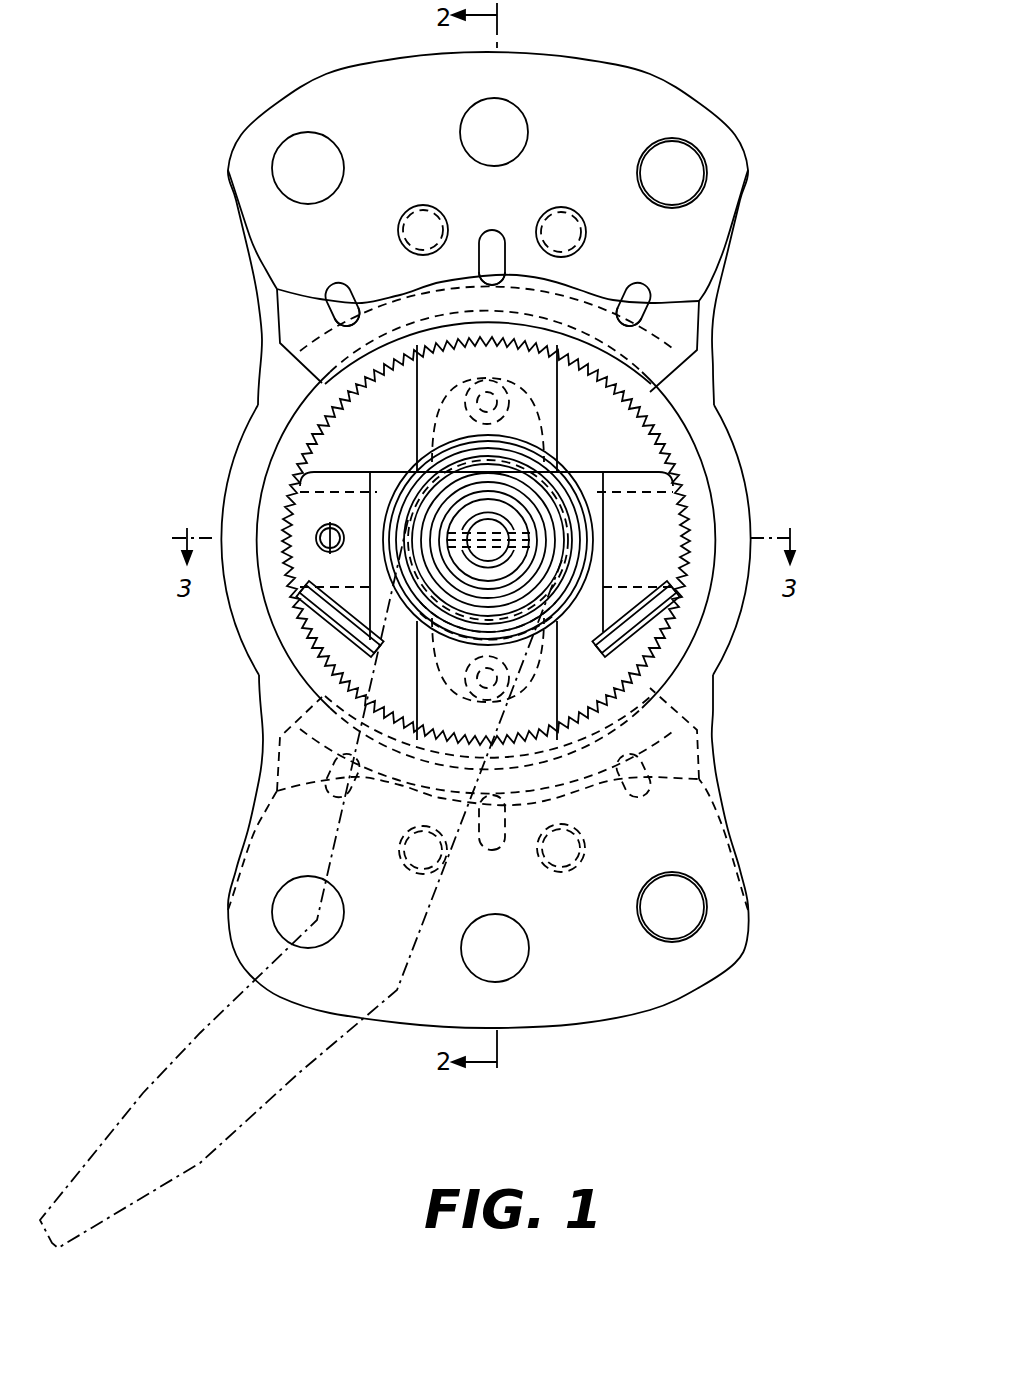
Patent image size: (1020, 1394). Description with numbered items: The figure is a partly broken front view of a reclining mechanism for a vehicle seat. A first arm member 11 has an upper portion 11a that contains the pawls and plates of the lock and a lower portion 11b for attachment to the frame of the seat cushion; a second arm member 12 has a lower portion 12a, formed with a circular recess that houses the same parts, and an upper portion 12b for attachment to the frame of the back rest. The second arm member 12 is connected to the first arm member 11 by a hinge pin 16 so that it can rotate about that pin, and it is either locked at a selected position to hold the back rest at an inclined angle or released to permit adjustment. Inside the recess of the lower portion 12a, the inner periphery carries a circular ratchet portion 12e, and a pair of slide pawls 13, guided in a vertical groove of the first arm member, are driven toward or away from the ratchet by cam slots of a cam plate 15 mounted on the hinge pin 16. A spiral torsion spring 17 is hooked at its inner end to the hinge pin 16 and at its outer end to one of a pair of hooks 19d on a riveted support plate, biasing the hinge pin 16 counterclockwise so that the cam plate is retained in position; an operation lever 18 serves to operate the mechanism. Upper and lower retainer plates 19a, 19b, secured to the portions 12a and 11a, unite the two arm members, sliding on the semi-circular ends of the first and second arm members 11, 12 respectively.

The first arm member 11 is at (245, 801).
The upper portion of first arm member 11a is at (579, 540).
The lower portion of first arm member 11b is at (695, 858).
The second arm member 12 is at (740, 248).
The lower portion of second arm member 12a is at (718, 645).
The upper portion of second arm member 12b is at (708, 313).
The circular ratchet portion 12e is at (662, 462).
The slide pawls 13 is at (568, 414).
The cam plate 15 is at (400, 443).
The hinge pin 16 is at (458, 556).
The spiral torsion spring 17 is at (372, 517).
The operation lever 18 is at (197, 1040).
The upper retainer plate 19a is at (673, 117).
The lower retainer plate 19b is at (655, 980).
The hooks 19d is at (305, 613).